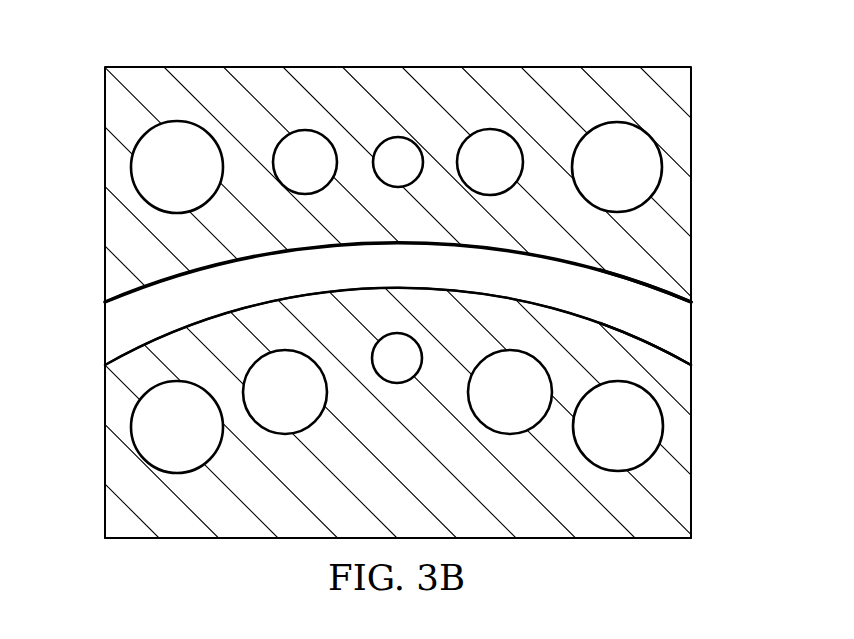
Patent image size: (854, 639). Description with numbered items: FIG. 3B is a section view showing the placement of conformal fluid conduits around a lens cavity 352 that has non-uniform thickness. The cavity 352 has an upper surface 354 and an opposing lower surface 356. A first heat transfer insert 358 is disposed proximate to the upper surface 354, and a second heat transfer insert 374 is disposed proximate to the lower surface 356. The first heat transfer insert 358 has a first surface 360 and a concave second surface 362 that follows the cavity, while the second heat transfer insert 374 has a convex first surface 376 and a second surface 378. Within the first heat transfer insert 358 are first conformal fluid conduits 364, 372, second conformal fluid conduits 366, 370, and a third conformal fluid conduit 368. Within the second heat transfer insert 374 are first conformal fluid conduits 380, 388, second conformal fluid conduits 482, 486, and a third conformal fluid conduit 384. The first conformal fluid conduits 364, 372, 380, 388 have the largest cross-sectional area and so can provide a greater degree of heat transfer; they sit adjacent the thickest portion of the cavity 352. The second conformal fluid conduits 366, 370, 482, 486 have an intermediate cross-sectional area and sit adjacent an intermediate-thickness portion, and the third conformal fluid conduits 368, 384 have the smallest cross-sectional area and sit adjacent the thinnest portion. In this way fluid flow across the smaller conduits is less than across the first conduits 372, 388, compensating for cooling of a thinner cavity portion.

The cavity 352 is at (115, 332).
The upper surface 354 is at (667, 298).
The lower surface 356 is at (671, 356).
The first heat transfer insert 358 is at (113, 102).
The first surface 360 is at (555, 67).
The concave second surface 362 is at (128, 292).
The first conformal fluid conduit 364 is at (152, 208).
The second conformal fluid conduit 366 is at (303, 131).
The third conformal fluid conduit 368 is at (388, 146).
The second conformal fluid conduit 370 is at (494, 131).
The first conformal fluid conduit 372 is at (606, 124).
The second heat transfer insert 374 is at (113, 516).
The convex first surface 376 is at (128, 352).
The second surface 378 is at (135, 539).
The first conformal fluid conduit 380 is at (154, 462).
The third conformal fluid conduit 384 is at (418, 376).
The first conformal fluid conduit 388 is at (641, 462).
The second lower aperture 482 is at (306, 428).
The fourth lower aperture 486 is at (532, 428).